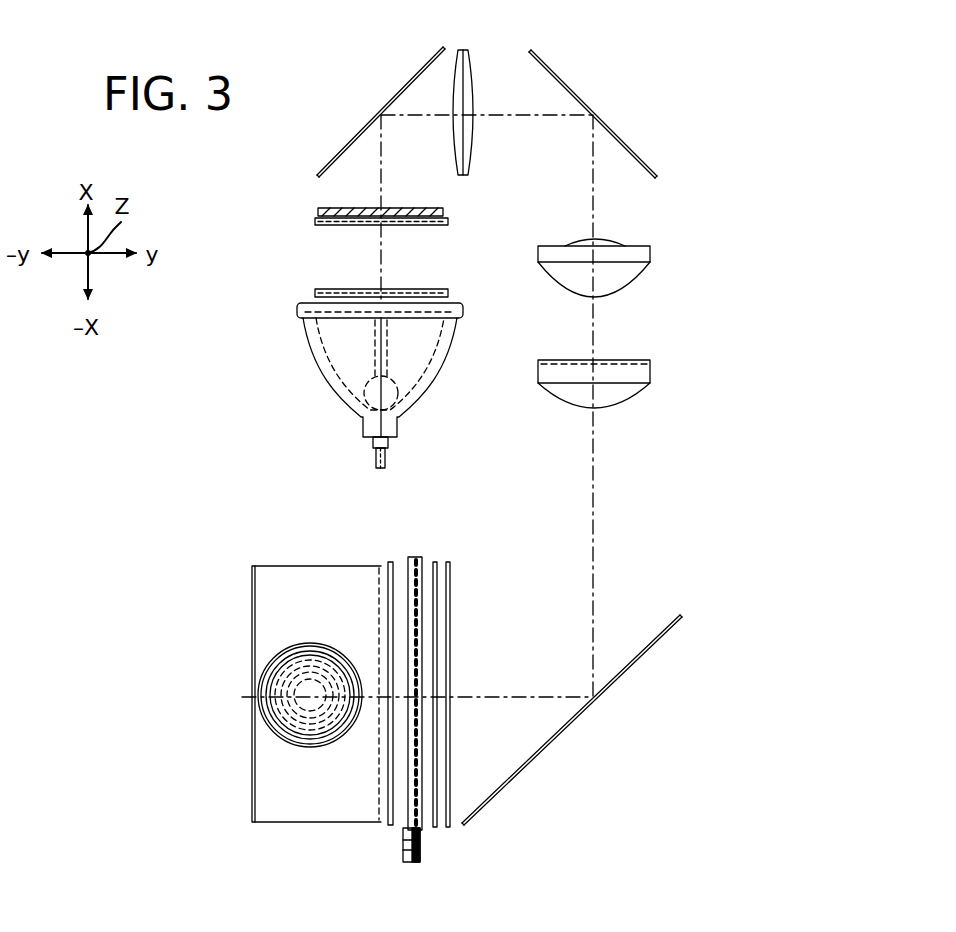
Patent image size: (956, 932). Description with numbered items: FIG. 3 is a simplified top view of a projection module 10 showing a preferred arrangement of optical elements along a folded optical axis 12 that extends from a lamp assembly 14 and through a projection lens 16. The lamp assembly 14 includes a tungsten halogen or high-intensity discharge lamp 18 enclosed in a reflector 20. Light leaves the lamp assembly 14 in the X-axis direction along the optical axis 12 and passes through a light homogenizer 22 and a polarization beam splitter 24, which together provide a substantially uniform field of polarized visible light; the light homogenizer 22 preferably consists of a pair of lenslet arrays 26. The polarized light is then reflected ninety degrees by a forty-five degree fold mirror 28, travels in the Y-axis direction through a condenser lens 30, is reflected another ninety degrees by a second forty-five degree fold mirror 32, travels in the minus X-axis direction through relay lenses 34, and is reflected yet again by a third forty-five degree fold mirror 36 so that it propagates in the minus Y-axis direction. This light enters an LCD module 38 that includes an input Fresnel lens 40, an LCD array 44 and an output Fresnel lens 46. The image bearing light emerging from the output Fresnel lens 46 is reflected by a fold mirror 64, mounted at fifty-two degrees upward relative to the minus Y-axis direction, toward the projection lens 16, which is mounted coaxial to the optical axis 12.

The projection module 10 is at (728, 210).
The optical axis 12 is at (595, 557).
The lamp assembly 14 is at (345, 385).
The projection lens 16 is at (283, 735).
The lamp 18 is at (410, 400).
The reflector 20 is at (318, 368).
The light homogenizer 22 is at (342, 257).
The polarization beam splitter 24 is at (326, 206).
The lenslet arrays 26 is at (389, 227).
The fold mirror 28 is at (358, 137).
The condenser lens 30 is at (470, 72).
The fold mirror 32 is at (617, 135).
The relay lenses 34 is at (622, 276).
The fold mirror 36 is at (565, 733).
The LCD module 38 is at (452, 713).
The input Fresnel lens 40 is at (450, 830).
The LCD array 44 is at (412, 865).
The output Fresnel lens 46 is at (390, 830).
The fold mirror 64 is at (273, 805).